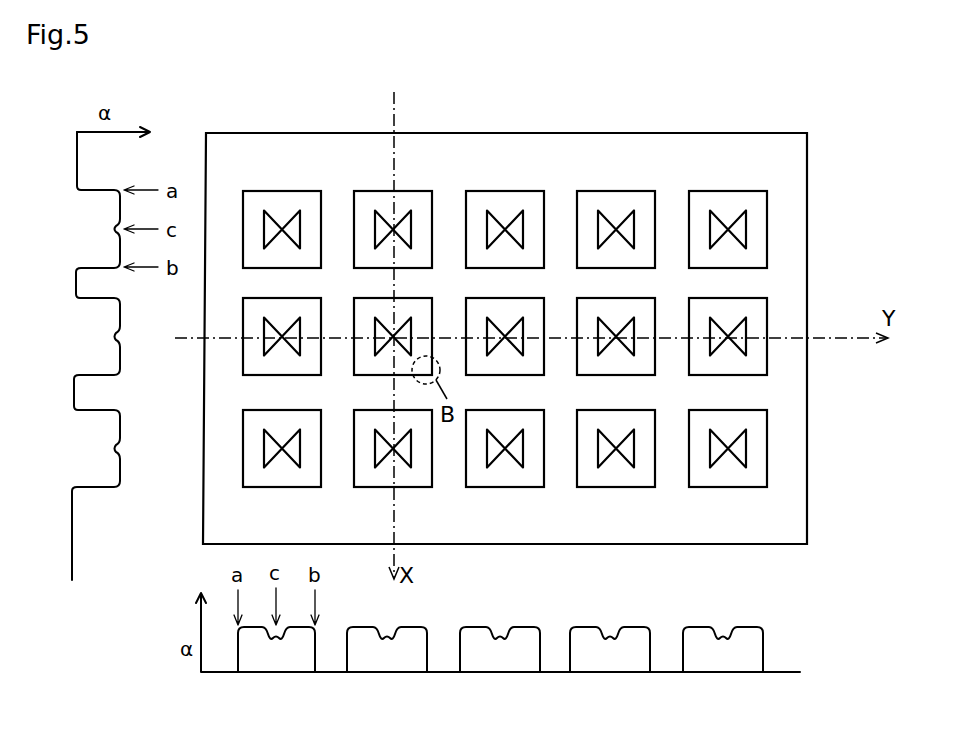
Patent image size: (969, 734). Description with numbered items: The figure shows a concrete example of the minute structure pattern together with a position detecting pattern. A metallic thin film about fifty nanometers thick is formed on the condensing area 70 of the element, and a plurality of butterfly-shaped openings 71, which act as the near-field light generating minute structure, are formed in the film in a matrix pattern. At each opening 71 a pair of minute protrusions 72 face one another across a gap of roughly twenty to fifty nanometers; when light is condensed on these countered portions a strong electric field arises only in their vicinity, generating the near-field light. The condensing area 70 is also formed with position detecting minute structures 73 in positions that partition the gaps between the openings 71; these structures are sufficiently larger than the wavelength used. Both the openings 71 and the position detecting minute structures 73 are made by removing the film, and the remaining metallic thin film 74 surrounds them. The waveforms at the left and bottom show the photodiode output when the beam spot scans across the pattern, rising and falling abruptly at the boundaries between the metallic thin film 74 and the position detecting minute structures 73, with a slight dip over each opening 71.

The condensing area 70 is at (300, 131).
The opening 71 is at (740, 230).
The minute protrusion 72 is at (727, 210).
The position detecting minute structure 73 is at (564, 195).
The metallic thin film 74 is at (716, 198).